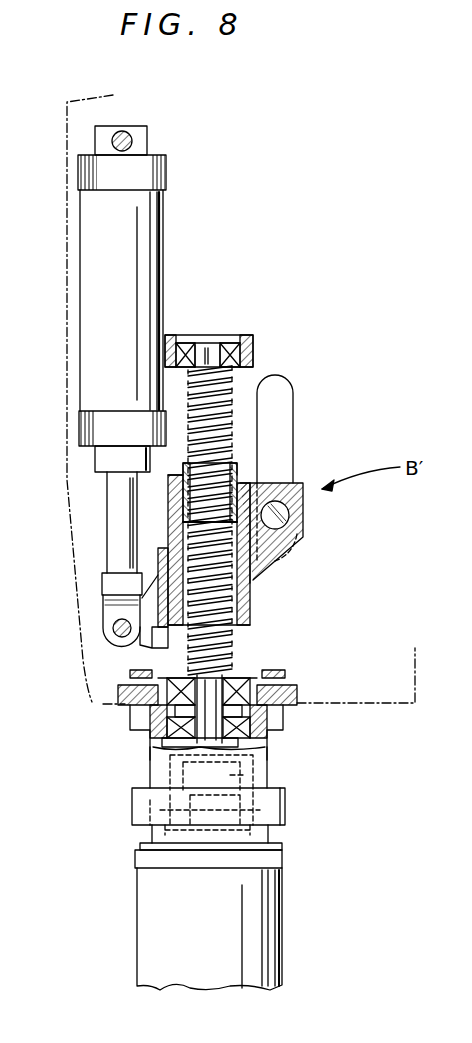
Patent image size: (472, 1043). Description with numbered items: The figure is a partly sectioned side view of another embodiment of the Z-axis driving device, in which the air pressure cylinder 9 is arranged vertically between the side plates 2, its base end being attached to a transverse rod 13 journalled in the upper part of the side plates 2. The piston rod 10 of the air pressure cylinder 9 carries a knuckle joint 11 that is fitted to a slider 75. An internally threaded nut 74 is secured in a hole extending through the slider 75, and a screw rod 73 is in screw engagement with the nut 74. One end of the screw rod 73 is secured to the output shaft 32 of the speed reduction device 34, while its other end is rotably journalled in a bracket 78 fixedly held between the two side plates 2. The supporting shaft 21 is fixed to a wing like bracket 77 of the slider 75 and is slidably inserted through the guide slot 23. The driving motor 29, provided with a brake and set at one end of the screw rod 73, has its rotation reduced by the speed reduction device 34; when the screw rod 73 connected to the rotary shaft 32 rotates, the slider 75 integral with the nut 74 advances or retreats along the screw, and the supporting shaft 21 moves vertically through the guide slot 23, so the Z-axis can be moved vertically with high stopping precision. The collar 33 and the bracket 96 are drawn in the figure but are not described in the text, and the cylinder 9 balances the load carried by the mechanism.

The side plates 2 is at (65, 405).
The air pressure cylinder 9 is at (92, 320).
The piston rod 10 is at (115, 500).
The knuckle joint 11 is at (105, 602).
The transverse rod 13 is at (127, 136).
The supporting shaft 21 is at (304, 512).
The guide slot 23 is at (290, 411).
The driving motor 29 is at (280, 936).
The output shaft 32 is at (270, 725).
The collar 33 is at (270, 828).
The speed reduction device 34 is at (267, 765).
The screw rod 73 is at (235, 373).
The internally threaded nut 74 is at (258, 468).
The slider 75 is at (252, 622).
The wing like bracket 77 is at (298, 540).
The bracket 78 is at (243, 335).
The bracket 96 is at (140, 648).